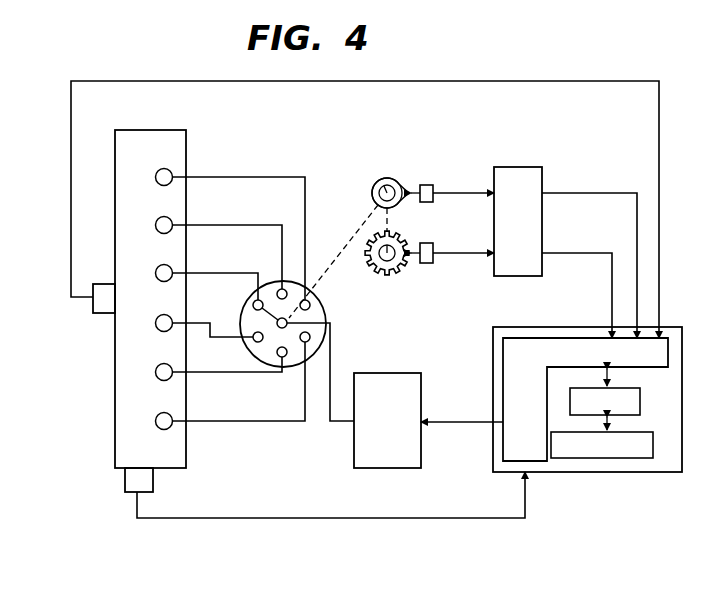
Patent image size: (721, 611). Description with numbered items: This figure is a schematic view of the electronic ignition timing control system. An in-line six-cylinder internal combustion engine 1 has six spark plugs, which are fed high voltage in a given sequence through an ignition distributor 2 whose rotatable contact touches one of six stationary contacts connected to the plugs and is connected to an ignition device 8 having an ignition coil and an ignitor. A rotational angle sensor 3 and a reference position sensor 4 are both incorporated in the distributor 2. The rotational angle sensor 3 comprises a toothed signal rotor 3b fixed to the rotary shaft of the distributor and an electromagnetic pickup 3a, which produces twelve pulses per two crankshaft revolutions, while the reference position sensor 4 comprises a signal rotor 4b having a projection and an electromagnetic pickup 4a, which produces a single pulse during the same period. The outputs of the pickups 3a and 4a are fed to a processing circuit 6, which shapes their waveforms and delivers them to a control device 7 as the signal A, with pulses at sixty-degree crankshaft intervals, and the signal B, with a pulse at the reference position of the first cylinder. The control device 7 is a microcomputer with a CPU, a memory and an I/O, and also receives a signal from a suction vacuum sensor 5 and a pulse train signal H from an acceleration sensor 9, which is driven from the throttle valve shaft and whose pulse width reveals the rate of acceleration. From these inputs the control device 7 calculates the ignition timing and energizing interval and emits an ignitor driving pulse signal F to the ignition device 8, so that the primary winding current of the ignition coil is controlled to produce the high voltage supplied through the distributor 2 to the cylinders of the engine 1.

The internal combustion engine 1 is at (120, 437).
The ignition distributor 2 is at (318, 316).
The rotational angle sensor 3 is at (408, 274).
The electromagnetic pickup 3a is at (427, 265).
The signal rotor 3b is at (372, 265).
The reference position sensor 4 is at (411, 175).
The electromagnetic pickup 4a is at (431, 184).
The signal rotor 4b is at (372, 188).
The suction vacuum sensor 5 is at (100, 313).
The processing circuit 6 is at (533, 170).
The control device 7 is at (585, 473).
The ignition device 8 is at (325, 473).
The acceleration sensor 9 is at (126, 480).
The signal A is at (567, 254).
The signal B is at (581, 194).
The ignitor driving pulse signal F is at (456, 423).
The pulse train signal H is at (440, 519).